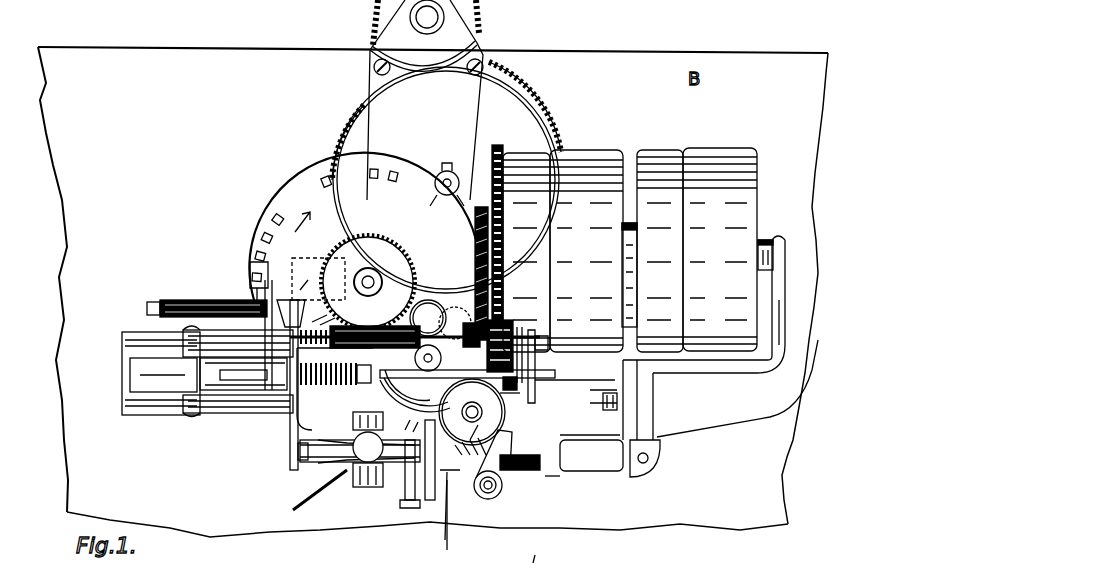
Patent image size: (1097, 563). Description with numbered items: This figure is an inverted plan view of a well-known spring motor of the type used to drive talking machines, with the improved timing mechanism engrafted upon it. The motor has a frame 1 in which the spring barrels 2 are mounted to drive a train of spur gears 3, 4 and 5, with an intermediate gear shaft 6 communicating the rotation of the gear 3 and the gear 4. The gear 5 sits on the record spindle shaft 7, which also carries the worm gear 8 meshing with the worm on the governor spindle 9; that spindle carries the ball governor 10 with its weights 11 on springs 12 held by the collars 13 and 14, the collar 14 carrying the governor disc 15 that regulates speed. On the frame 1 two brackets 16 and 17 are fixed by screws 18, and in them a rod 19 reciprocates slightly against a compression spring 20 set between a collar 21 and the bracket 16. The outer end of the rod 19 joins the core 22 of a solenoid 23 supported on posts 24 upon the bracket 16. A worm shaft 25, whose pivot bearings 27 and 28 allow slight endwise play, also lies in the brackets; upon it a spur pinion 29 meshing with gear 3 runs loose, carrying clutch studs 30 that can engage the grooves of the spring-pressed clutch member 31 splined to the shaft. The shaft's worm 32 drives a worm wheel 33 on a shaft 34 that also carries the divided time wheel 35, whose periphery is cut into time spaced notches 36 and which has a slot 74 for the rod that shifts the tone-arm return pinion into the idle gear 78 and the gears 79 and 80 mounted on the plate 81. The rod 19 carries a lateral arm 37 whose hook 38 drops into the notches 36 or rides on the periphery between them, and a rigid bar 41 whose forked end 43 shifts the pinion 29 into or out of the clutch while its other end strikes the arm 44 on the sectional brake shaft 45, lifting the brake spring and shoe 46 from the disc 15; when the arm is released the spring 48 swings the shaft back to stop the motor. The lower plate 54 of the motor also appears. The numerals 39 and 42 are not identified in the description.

The frame 1 is at (622, 477).
The spring barrels 2 is at (638, 250).
The spur gear 3 is at (497, 147).
The spur gear 4 is at (411, 425).
The spur gear 5 is at (490, 412).
The intermediate gear shaft 6 is at (560, 372).
The record spindle shaft 7 is at (527, 441).
The worm gear 8 is at (515, 432).
The governor spindle 9 is at (450, 510).
The ball governor 10 is at (337, 455).
The weights 11 is at (372, 478).
The springs 12 is at (335, 432).
The collar 13 is at (300, 462).
The collar 14 is at (402, 485).
The governor disc 15 is at (428, 464).
The bracket 16 is at (289, 422).
The bracket 17 is at (591, 452).
The screws 18 is at (540, 446).
The rod 19 is at (436, 380).
The compression spring 20 is at (328, 389).
The collar 21 is at (355, 385).
The core 22 is at (243, 374).
The solenoid 23 is at (135, 378).
The posts 24 is at (222, 412).
The worm shaft 25 is at (327, 315).
The pivot bearing 27 is at (299, 310).
The pivot bearing 28 is at (528, 326).
The spur pinion 29 is at (502, 318).
The clutch studs 30 is at (445, 360).
The clutch member 31 is at (452, 303).
The worm 32 is at (375, 326).
The worm wheel 33 is at (405, 255).
The shaft 34 is at (353, 283).
The time wheel 35 is at (343, 246).
The time spaced notches 36 is at (326, 178).
The lateral arm 37 is at (255, 297).
The hook 38 is at (254, 275).
The gear 39 is at (354, 22).
The bar 41 is at (578, 378).
The rod 42 is at (536, 557).
The forked end 43 is at (549, 343).
The arm 44 is at (500, 470).
The sectional brake shaft 45 is at (502, 490).
The brake spring and shoe 46 is at (443, 513).
The spring 48 is at (558, 476).
The lower plate 54 is at (407, 387).
The slot 74 is at (305, 324).
The idle gear 78 is at (436, 300).
The gear 79 is at (527, 112).
The gear 80 is at (482, 28).
The plate 81 is at (425, 103).